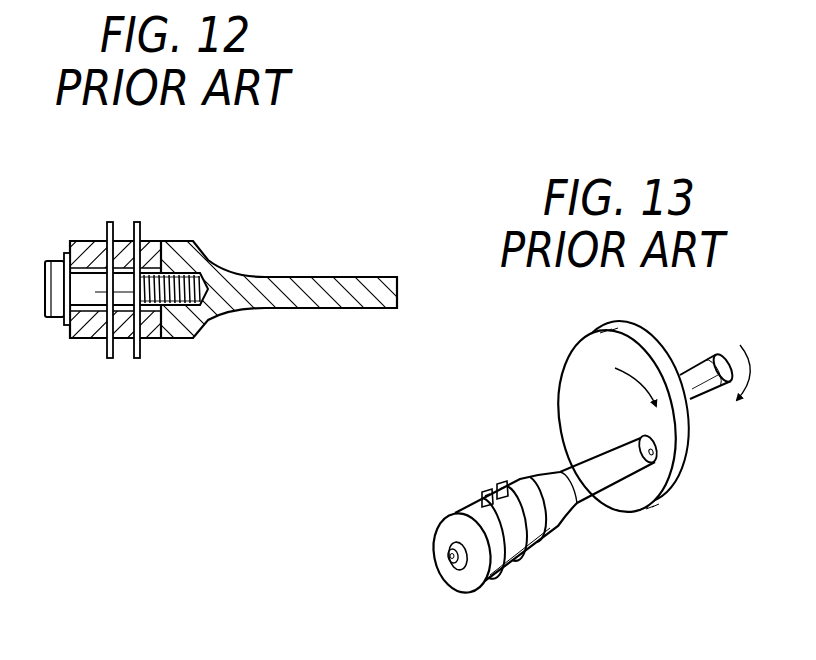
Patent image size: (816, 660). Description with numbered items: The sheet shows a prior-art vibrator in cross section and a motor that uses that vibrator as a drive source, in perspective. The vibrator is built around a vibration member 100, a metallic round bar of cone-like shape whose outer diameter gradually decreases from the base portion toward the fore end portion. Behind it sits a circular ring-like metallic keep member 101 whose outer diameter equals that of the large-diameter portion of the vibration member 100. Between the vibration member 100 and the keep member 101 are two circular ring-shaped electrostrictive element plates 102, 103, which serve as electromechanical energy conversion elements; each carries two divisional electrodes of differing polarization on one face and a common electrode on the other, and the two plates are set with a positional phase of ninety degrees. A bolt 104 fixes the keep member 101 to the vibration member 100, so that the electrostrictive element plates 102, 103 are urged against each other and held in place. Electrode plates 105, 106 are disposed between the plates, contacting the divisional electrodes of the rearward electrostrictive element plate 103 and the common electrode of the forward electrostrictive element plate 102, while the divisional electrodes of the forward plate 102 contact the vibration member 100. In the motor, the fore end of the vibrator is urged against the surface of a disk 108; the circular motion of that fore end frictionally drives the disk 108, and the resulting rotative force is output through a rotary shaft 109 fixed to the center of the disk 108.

In FIG. 12, the vibration member 100 is at (212, 256).
In FIG. 13, the vibration member 100 is at (563, 485).
In FIG. 12, the keep member 101 is at (82, 327).
In FIG. 13, the keep member 101 is at (472, 513).
In FIG. 12, the electrostrictive element plate 102 is at (163, 240).
In FIG. 13, the electrostrictive element plate 102 is at (540, 545).
In FIG. 12, the electrostrictive element plate 103 is at (121, 245).
In FIG. 13, the electrostrictive element plate 103 is at (527, 555).
In FIG. 12, the bolt 104 is at (85, 272).
In FIG. 13, the bolt 104 is at (434, 531).
In FIG. 12, the electrode plate 105 is at (110, 221).
In FIG. 12, the electrode plate 106 is at (141, 228).
In FIG. 13, the disk 108 is at (654, 485).
In FIG. 13, the rotary shaft 109 is at (706, 372).